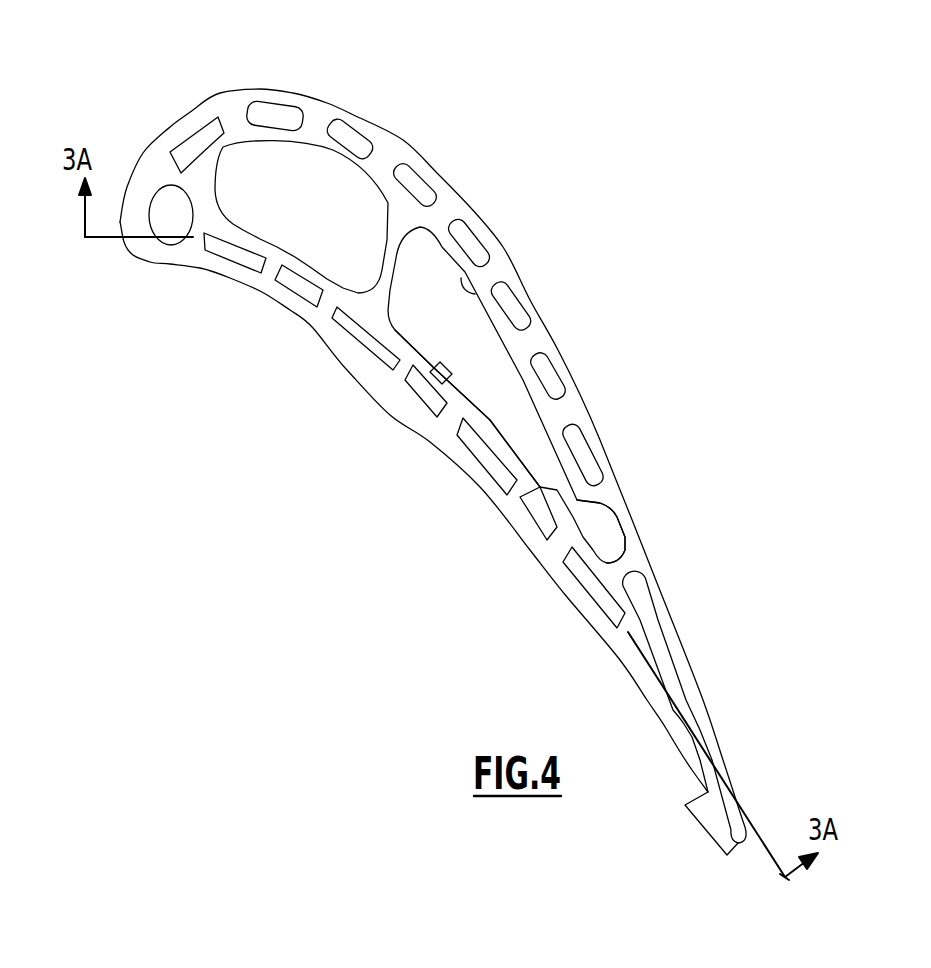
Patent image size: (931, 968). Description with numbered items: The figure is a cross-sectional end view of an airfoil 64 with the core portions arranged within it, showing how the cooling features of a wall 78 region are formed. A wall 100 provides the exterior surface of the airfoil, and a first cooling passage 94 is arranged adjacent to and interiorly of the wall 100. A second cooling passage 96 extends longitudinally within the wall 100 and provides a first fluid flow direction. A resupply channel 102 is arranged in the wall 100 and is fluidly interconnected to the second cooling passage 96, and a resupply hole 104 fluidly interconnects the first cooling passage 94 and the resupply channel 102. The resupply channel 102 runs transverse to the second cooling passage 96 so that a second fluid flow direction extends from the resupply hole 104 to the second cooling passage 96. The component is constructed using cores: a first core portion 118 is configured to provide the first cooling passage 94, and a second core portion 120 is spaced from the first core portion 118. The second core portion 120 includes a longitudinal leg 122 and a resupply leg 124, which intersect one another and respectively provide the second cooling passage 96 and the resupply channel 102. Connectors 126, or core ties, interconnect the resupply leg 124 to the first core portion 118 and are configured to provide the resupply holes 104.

The airfoil 64 is at (366, 58).
The pressure side wall 78 is at (195, 280).
The first core portion 118 is at (358, 218).
The first cooling passage 94 is at (470, 289).
The second core portion 120 is at (460, 458).
The resupply leg 124 is at (427, 367).
The connectors 126 is at (438, 378).
The second cooling passage 96 is at (492, 463).
The longitudinal leg 122 is at (488, 470).
The resupply hole 104 is at (553, 497).
The resupply channel 102 is at (548, 548).
The wall 100 is at (577, 590).